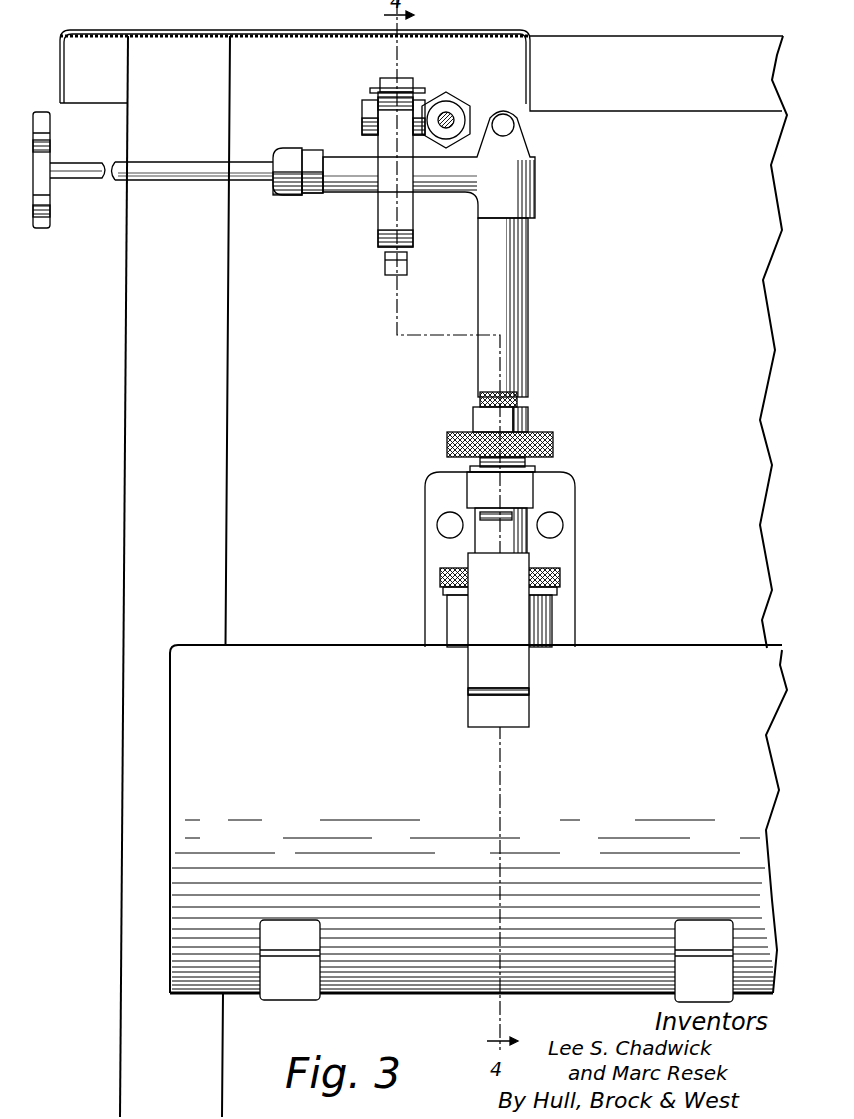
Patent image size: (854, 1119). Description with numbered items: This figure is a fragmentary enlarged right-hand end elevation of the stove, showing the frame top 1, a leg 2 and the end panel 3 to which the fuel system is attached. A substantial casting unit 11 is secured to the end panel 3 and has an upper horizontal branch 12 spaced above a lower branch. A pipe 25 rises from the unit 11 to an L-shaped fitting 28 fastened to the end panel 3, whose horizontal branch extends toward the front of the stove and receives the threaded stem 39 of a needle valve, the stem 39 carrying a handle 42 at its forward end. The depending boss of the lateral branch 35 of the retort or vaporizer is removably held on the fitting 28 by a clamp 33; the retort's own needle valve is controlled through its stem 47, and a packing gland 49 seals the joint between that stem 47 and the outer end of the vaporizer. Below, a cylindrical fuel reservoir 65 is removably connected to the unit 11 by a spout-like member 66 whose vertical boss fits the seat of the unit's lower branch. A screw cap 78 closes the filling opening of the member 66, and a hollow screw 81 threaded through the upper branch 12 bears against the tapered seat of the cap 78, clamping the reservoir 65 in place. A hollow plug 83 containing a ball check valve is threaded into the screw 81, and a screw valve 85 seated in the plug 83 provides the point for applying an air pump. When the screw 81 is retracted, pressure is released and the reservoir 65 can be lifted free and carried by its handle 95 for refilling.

The top 1 is at (603, 38).
The legs 2 is at (212, 491).
The end panel 3 is at (656, 246).
The unit 11 is at (527, 547).
The branch 12 is at (470, 490).
The pipe 25 is at (522, 307).
The fitting 28 is at (536, 185).
The clamp 33 is at (378, 216).
The lateral branch 35 is at (362, 110).
The threaded stem 39 is at (198, 165).
The handle 42 is at (50, 222).
The stem 47 is at (450, 116).
The packing gland 49 is at (440, 98).
The fuel reservoir 65 is at (438, 778).
The spout like member 66 is at (560, 620).
The screw cap 78 is at (440, 577).
The hollow screw 81 is at (536, 469).
The hollow plug 83 is at (522, 421).
The screw valve 85 is at (480, 395).
The handle 95 is at (480, 668).